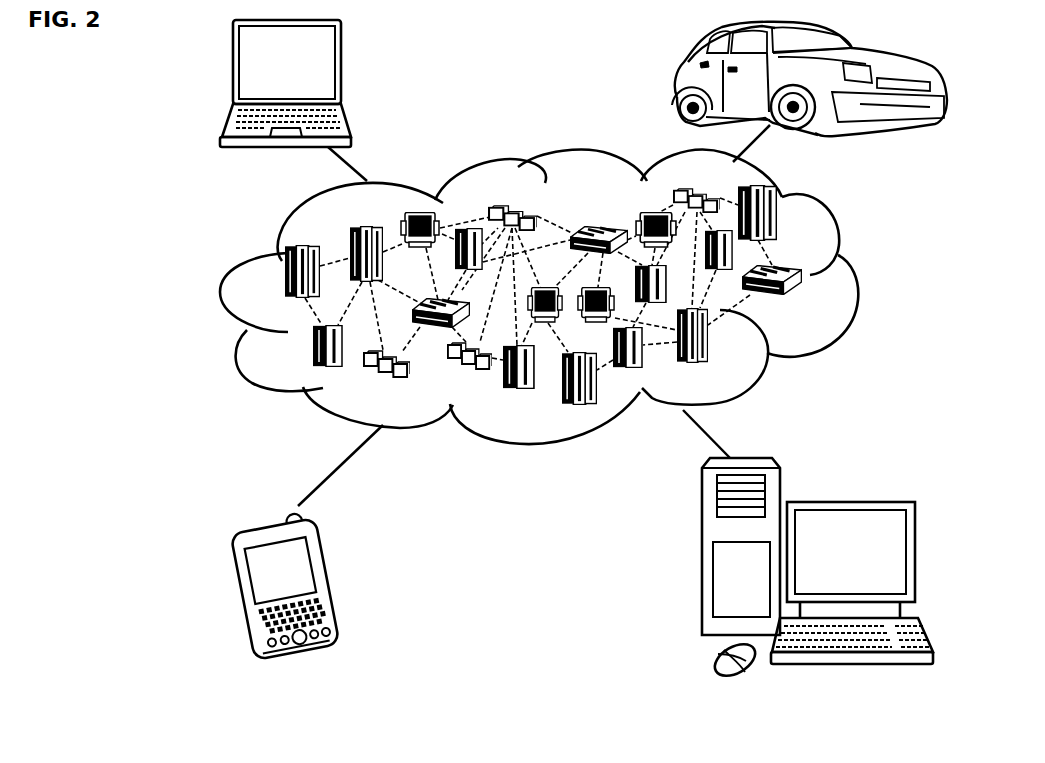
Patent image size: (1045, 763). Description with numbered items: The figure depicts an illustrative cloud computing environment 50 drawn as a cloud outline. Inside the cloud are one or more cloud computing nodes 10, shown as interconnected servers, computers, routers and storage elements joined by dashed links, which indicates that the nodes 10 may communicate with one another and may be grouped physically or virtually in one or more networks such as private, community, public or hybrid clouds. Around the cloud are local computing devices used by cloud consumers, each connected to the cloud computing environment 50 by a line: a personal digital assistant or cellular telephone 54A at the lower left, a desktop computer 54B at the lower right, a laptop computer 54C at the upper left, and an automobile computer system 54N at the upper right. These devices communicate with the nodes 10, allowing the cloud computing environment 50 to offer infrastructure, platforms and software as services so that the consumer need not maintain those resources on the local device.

The cloud computing environment 50 is at (852, 277).
The cloud computing nodes 10 is at (812, 303).
The personal digital assistant (PDA) or cellular telephone 54A is at (336, 575).
The desktop computer 54B is at (848, 502).
The laptop computer 54C is at (342, 68).
The automobile computer system 54N is at (678, 78).